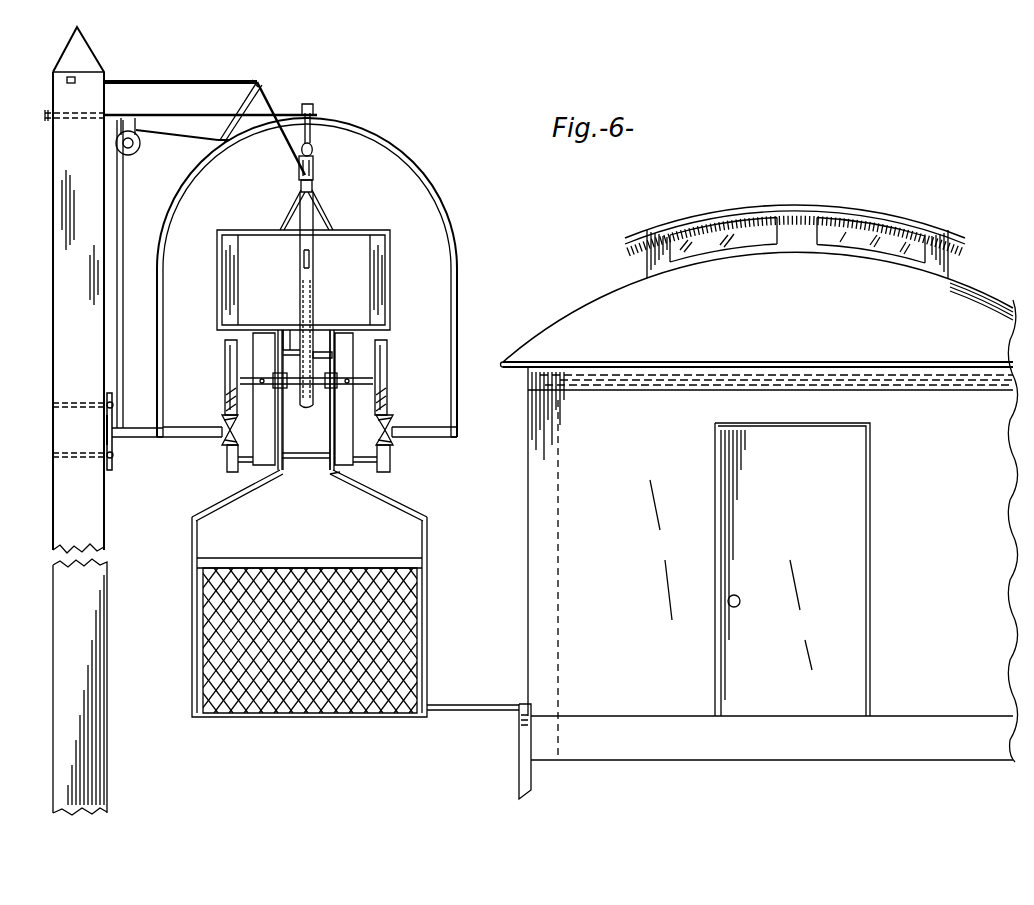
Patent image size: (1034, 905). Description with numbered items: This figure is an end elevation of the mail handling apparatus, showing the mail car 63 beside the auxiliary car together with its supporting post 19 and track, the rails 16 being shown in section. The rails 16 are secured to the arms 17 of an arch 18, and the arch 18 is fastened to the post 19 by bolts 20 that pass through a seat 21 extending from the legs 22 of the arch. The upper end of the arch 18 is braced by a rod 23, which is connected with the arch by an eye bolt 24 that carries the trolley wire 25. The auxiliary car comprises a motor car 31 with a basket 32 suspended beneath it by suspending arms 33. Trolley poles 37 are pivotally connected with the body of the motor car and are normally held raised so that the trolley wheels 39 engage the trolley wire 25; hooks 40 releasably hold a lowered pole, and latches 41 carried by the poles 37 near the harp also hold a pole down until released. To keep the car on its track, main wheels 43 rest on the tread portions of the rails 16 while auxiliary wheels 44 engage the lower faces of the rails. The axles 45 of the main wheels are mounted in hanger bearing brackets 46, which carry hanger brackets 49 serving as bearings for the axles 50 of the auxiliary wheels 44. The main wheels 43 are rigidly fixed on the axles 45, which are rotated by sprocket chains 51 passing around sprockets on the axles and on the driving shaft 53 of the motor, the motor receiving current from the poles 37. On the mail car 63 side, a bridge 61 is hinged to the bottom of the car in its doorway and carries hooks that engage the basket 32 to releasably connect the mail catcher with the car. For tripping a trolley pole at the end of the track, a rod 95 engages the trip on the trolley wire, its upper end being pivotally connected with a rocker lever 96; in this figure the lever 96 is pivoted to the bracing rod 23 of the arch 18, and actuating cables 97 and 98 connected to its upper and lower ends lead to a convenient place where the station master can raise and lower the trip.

The rails 16 is at (388, 424).
The arms 17 is at (186, 436).
The arches 18 is at (430, 185).
The post 19 is at (60, 360).
The bolts 20 is at (114, 402).
The seat 21 is at (107, 448).
The legs 22 is at (140, 425).
The rods 23 is at (180, 106).
The eye bolts 24 is at (312, 128).
The trolley wire 25 is at (316, 150).
The motor car 31 is at (372, 282).
The basket 32 is at (312, 560).
The suspending arms 33 is at (262, 484).
The trolley poles 37 is at (318, 186).
The trolley wheels 39 is at (316, 170).
The hooks 40 is at (290, 212).
The latches 41 is at (310, 288).
The main wheels 43 is at (225, 366).
The auxiliary wheels 44 is at (228, 474).
The axles 45 is at (240, 384).
The hanger bearing brackets 46 is at (258, 352).
The hanger brackets 49 is at (342, 414).
The axles 50 is at (360, 470).
The sprocket chains 51 is at (290, 345).
The driving shaft 53 is at (328, 350).
The bridge 61 is at (460, 705).
The mail car 63 is at (528, 440).
The rod 95 is at (278, 108).
The rocker lever 96 is at (236, 136).
The actuating cable 97 is at (160, 130).
The actuating cable 98 is at (165, 73).